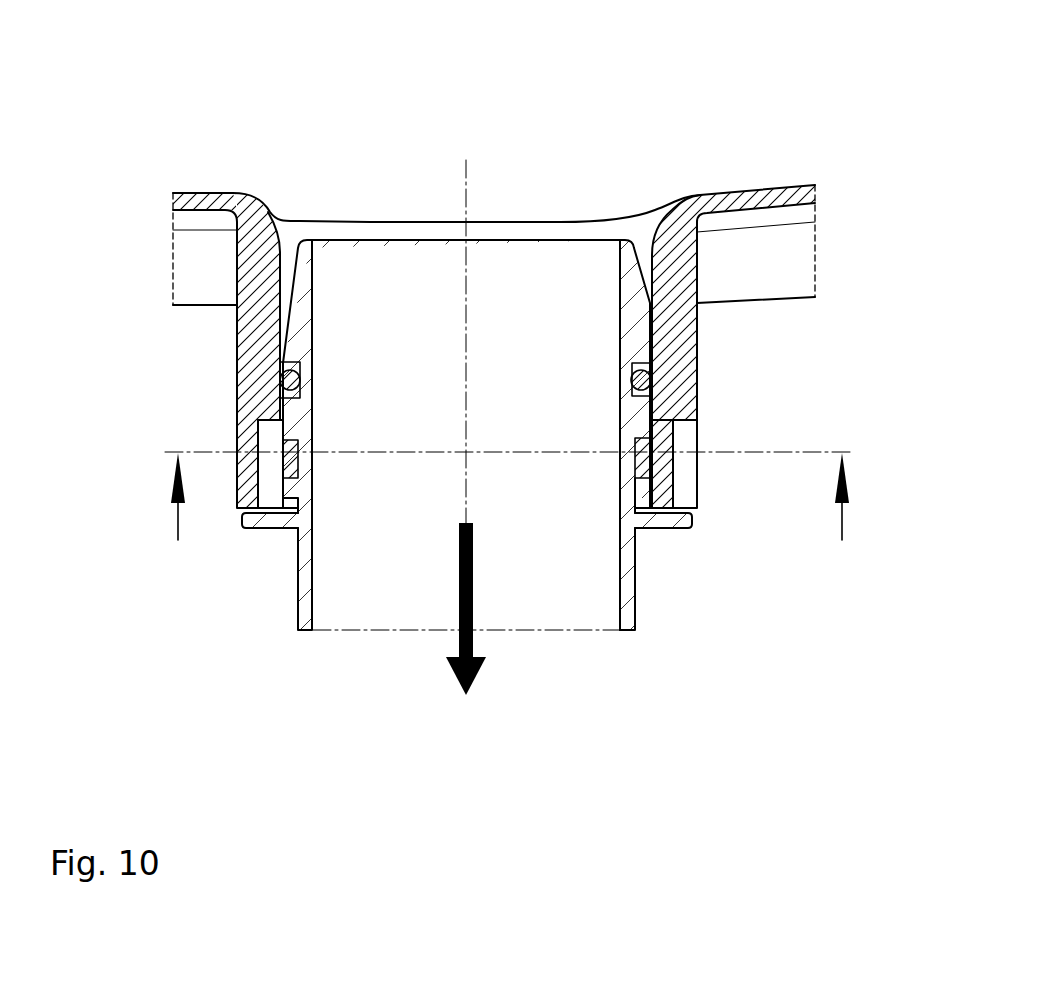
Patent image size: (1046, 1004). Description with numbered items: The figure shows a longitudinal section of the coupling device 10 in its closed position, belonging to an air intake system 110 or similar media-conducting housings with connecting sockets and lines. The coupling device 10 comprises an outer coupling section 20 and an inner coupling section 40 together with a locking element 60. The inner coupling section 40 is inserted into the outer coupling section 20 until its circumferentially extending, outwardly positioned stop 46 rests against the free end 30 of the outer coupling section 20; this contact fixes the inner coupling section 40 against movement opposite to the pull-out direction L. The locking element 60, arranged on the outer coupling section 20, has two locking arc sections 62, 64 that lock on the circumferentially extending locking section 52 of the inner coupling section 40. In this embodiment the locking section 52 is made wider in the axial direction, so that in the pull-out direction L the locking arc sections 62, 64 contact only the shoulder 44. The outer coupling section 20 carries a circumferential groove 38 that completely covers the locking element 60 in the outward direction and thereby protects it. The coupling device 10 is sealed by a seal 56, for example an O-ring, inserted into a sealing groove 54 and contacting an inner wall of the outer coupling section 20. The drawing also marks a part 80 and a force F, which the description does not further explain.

The coupling device 10 is at (637, 131).
The outer coupling section 20 is at (237, 358).
The free end 30 is at (693, 510).
The circumferential groove 38 is at (676, 471).
The inner coupling section 40 is at (310, 503).
The shoulder 44 is at (298, 437).
The stop 46 is at (687, 530).
The locking section 52 is at (293, 497).
The sealing groove 54 is at (303, 382).
The seal 56 is at (302, 368).
The locking element 60 is at (466, 482).
The locking arc section 62 is at (300, 464).
The locking arc section 64 is at (641, 459).
The housing wall 80 is at (797, 195).
The air intake system 110 is at (640, 620).
The pull-out direction L is at (470, 650).
The force F is at (525, 496).